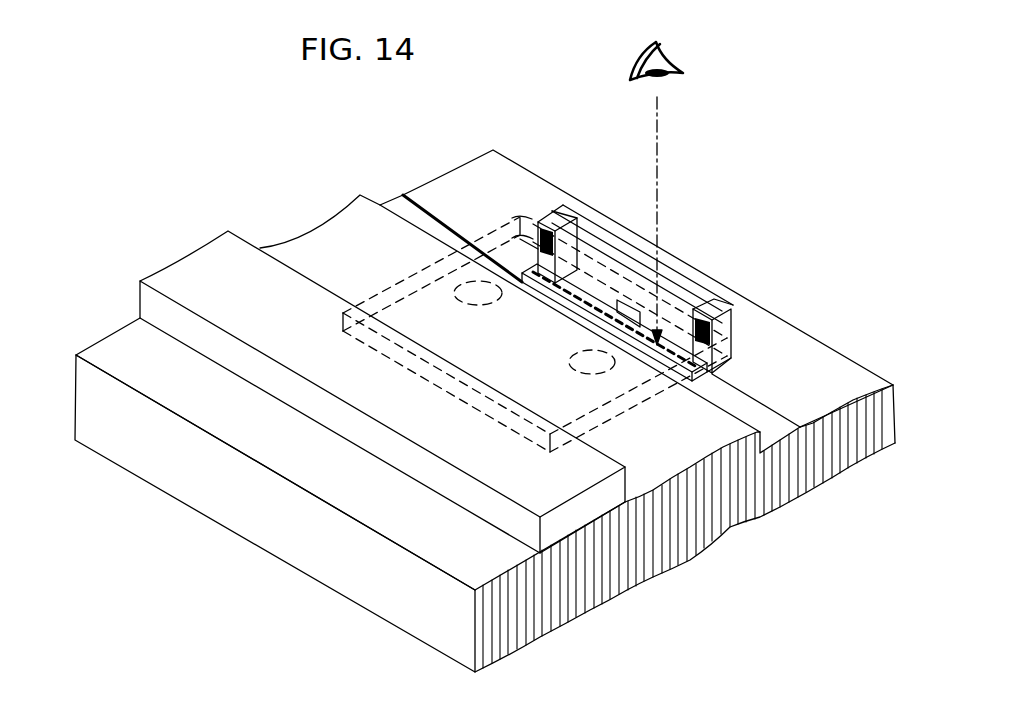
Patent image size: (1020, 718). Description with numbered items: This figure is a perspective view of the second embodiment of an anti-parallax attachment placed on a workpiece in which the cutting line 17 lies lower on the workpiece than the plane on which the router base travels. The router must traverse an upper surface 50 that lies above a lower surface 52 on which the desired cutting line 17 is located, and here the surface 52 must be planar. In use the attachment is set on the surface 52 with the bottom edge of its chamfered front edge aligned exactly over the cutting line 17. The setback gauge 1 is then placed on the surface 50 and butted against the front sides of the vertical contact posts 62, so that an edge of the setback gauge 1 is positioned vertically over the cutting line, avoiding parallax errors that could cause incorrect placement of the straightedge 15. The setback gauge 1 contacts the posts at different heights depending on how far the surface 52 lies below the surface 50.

The setback gauge 1 is at (395, 282).
The straightedge 15 is at (212, 280).
The cutting line 17 is at (447, 216).
The surface 50 is at (688, 449).
The surface 52 is at (810, 381).
The vertical contact posts 62 is at (543, 218).